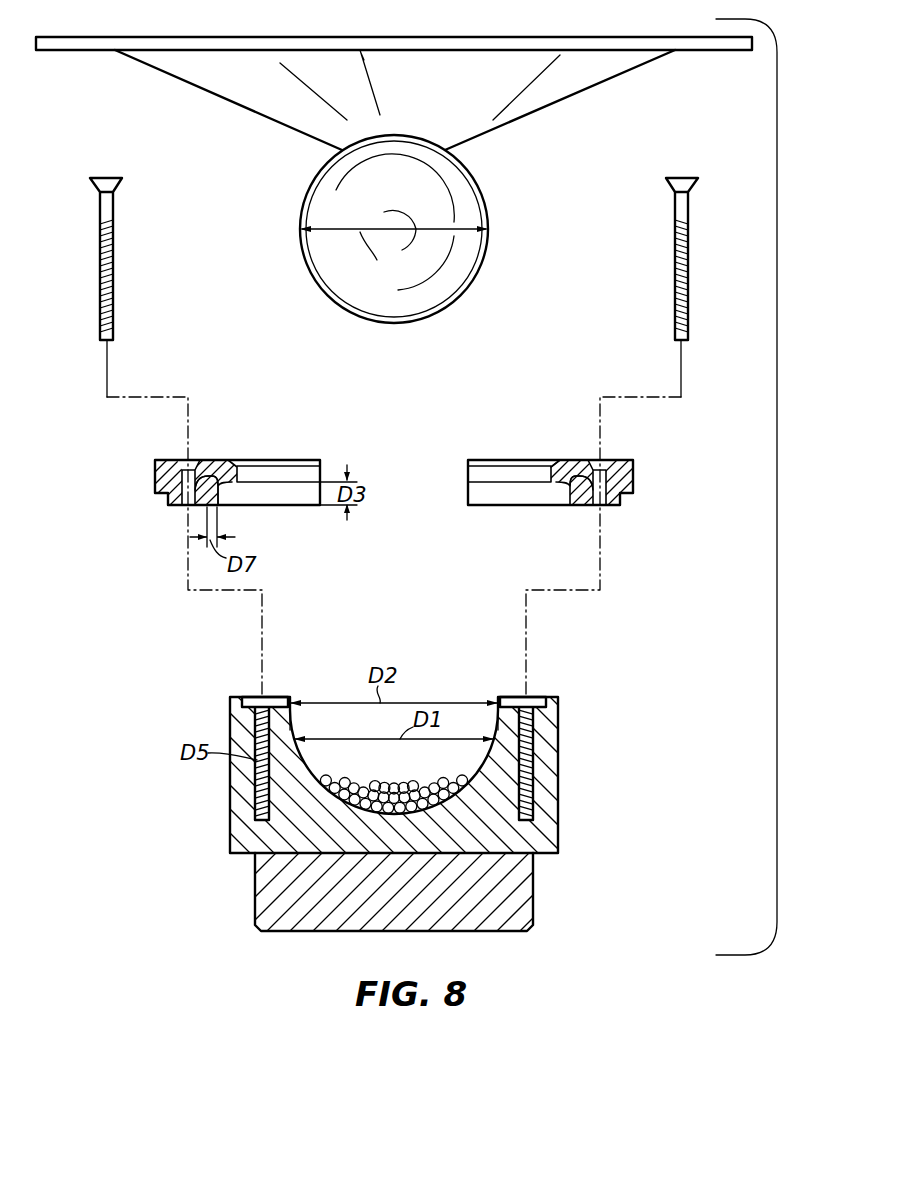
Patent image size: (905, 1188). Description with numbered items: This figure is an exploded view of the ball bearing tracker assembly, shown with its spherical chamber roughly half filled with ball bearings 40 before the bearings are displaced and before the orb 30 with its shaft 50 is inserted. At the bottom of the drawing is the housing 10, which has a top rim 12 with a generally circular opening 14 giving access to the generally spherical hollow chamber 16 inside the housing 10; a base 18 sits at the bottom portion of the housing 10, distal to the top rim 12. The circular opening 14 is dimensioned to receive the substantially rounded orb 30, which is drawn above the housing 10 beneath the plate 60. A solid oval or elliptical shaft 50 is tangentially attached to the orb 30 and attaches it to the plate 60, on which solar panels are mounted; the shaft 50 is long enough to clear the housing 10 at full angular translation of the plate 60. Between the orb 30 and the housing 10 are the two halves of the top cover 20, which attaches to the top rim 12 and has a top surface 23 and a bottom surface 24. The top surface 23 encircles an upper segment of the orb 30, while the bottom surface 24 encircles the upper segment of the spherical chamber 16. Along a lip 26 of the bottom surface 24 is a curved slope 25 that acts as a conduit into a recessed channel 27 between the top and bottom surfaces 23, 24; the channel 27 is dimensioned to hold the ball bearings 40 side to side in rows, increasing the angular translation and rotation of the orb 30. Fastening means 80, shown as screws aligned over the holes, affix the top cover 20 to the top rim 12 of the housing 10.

The housing 10 is at (558, 832).
The top rim 12 is at (540, 702).
The circular opening 14 is at (498, 700).
The spherical hollow chamber 16 is at (327, 718).
The base 18 is at (533, 883).
The top cover 20 is at (635, 465).
The top surface 23 is at (563, 466).
The bottom surface 24 is at (620, 503).
The curved slope 25 is at (212, 503).
The lip 26 is at (575, 490).
The recessed channel 27 is at (177, 507).
The orb 30 is at (333, 273).
The ball bearing 40 is at (470, 778).
The shaft 50 is at (190, 83).
The plate 60 is at (75, 51).
The fastening means 80 is at (98, 260).